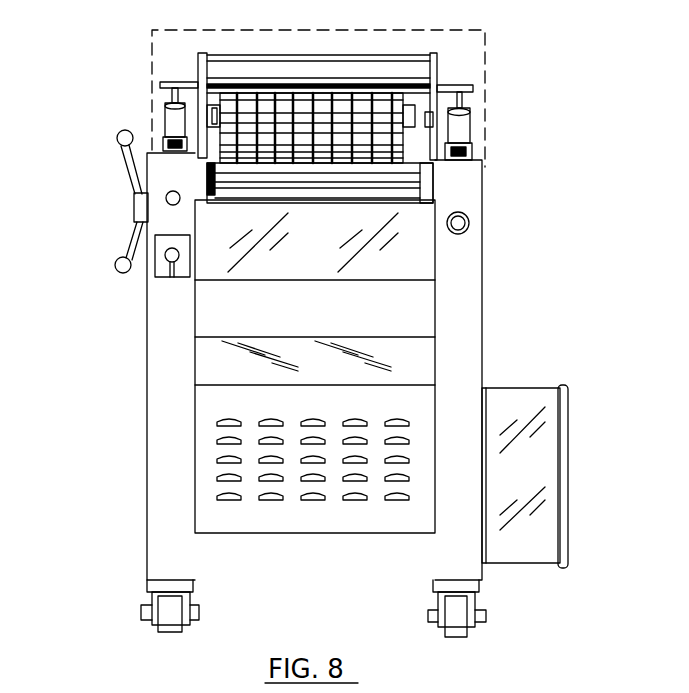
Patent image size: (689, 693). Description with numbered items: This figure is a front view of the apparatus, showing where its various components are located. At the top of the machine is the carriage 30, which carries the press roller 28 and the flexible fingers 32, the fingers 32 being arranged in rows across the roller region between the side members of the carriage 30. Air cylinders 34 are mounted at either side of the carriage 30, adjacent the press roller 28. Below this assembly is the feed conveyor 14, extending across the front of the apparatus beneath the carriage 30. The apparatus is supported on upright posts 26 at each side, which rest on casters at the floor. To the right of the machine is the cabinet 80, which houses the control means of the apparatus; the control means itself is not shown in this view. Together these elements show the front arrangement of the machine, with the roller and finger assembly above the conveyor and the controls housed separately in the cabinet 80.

The feed conveyor 14 is at (210, 197).
The support post 26 is at (150, 458).
The press roller 28 is at (420, 105).
The carriage 30 is at (438, 67).
The flexible fingers 32 is at (225, 142).
The air cylinders 34 is at (158, 115).
The cabinet 80 is at (567, 513).